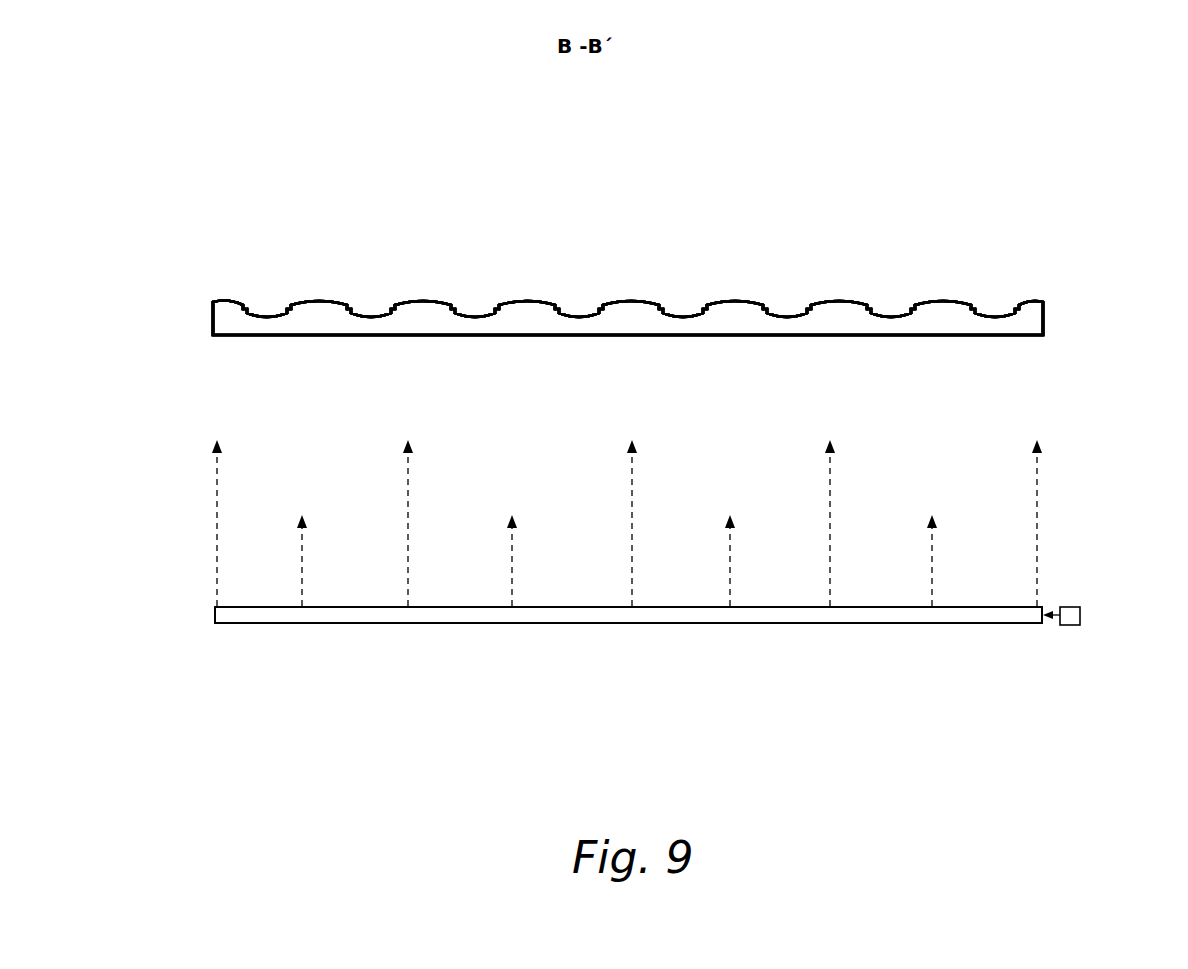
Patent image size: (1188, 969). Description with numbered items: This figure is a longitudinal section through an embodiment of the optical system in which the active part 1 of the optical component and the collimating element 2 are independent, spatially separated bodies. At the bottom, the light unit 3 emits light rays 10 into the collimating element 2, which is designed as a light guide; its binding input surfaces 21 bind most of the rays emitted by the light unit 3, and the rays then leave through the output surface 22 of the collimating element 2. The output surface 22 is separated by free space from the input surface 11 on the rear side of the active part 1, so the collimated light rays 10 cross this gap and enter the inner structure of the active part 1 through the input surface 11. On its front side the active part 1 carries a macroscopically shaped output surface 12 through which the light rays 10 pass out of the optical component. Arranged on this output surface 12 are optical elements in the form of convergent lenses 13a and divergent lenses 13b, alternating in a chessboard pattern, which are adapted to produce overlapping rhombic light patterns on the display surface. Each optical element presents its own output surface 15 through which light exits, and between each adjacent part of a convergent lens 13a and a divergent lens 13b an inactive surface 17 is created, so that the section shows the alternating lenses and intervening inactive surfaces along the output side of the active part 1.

The active part of the optical component 1 is at (210, 319).
The collimating element 2 is at (690, 627).
The light unit 3 is at (1084, 629).
The light rays 10 is at (221, 510).
The input surface 11 is at (1019, 359).
The output surface 12 is at (232, 251).
The convergent lenses 13a is at (267, 310).
The divergent lenses 13b is at (267, 319).
The output surface of optical element 15 is at (220, 300).
The inactive surface 17 is at (222, 321).
The binding input surfaces 21 is at (1038, 614).
The output surface of the collimating element 22 is at (647, 606).